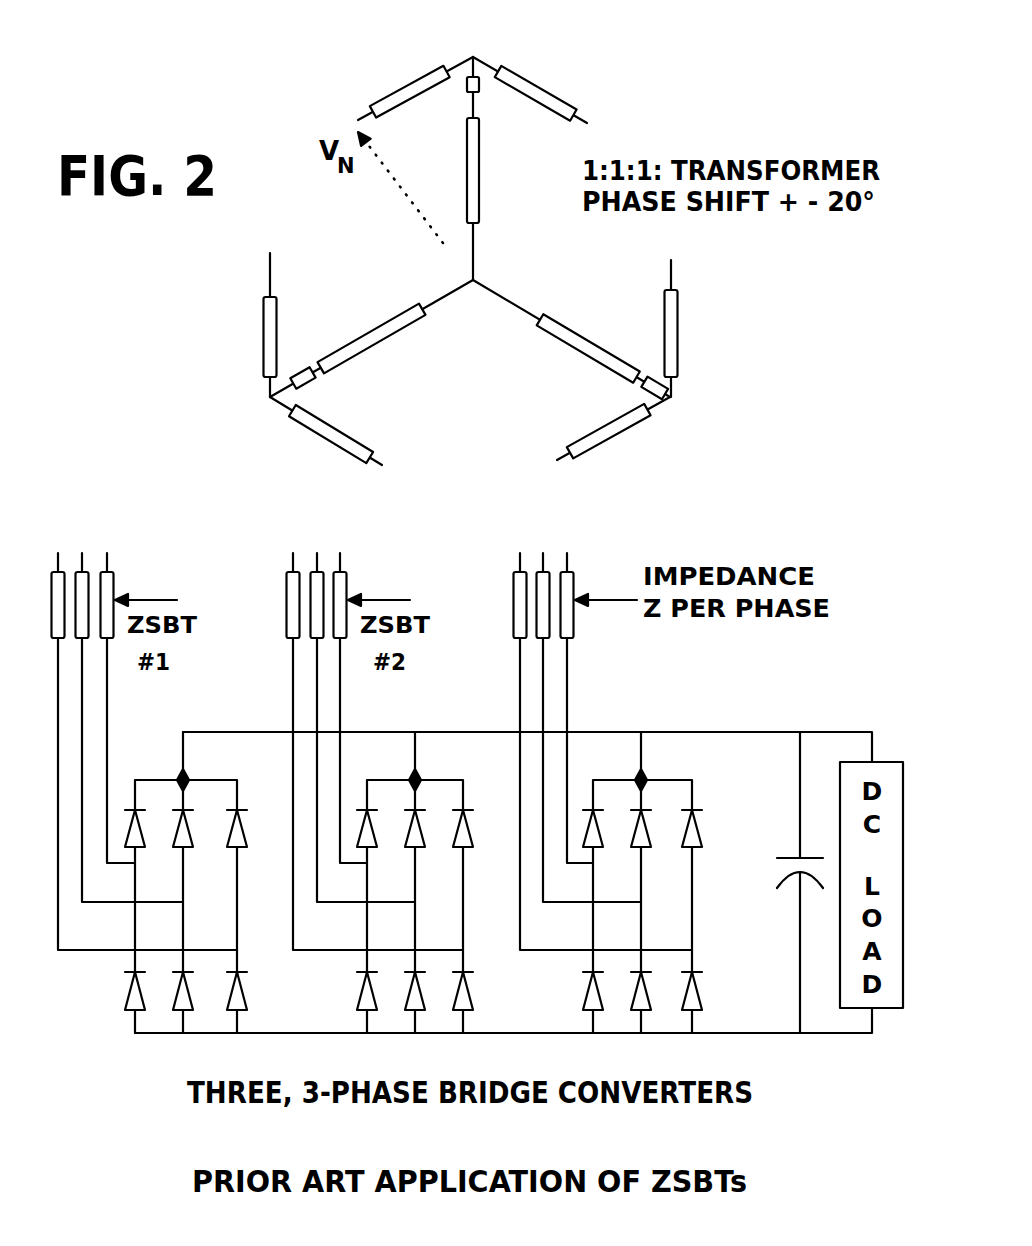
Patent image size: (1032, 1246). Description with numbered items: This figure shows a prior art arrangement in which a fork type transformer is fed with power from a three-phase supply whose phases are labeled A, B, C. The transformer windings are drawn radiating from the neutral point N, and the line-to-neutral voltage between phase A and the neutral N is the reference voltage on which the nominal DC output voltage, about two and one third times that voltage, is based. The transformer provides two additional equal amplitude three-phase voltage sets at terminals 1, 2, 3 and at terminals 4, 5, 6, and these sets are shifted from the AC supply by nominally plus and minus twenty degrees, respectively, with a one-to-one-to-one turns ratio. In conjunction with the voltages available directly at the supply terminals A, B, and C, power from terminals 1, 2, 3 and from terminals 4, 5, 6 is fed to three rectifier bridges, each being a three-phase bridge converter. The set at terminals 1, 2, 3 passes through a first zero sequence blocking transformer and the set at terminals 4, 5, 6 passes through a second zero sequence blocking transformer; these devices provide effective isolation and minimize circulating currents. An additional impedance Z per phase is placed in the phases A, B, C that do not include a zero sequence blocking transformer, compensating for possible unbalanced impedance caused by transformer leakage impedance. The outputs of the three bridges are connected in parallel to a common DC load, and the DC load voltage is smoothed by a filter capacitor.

The terminal 1 is at (261, 347).
The terminal 2 is at (378, 433).
The terminal 3 is at (256, 517).
The terminal 4 is at (453, 347).
The terminal 5 is at (489, 517).
The terminal 6 is at (305, 430).
The three-phase supply phase A is at (499, 347).
The three-phase supply phase B is at (601, 476).
The three-phase supply phase C is at (433, 471).
The neutral N is at (470, 338).